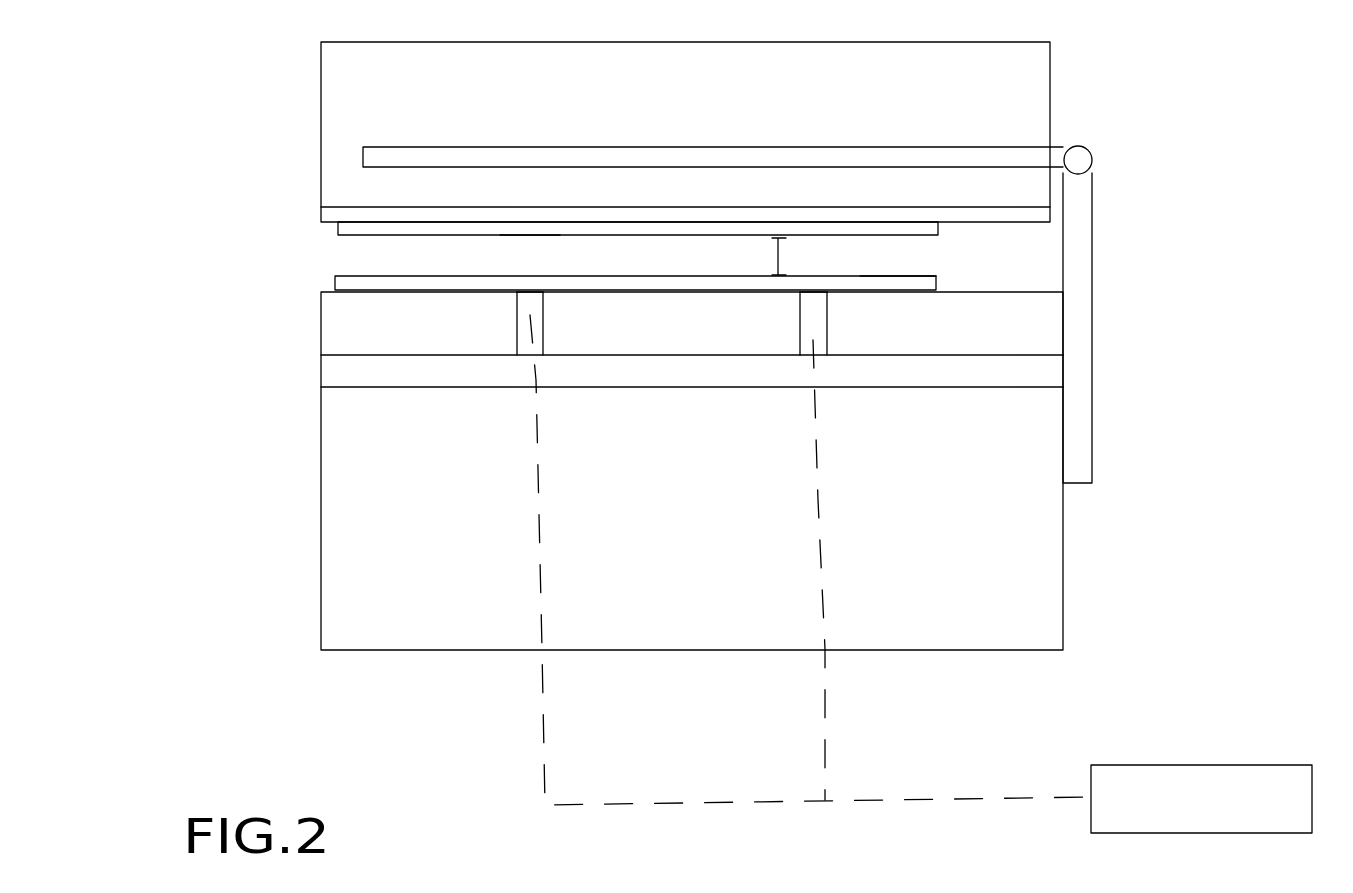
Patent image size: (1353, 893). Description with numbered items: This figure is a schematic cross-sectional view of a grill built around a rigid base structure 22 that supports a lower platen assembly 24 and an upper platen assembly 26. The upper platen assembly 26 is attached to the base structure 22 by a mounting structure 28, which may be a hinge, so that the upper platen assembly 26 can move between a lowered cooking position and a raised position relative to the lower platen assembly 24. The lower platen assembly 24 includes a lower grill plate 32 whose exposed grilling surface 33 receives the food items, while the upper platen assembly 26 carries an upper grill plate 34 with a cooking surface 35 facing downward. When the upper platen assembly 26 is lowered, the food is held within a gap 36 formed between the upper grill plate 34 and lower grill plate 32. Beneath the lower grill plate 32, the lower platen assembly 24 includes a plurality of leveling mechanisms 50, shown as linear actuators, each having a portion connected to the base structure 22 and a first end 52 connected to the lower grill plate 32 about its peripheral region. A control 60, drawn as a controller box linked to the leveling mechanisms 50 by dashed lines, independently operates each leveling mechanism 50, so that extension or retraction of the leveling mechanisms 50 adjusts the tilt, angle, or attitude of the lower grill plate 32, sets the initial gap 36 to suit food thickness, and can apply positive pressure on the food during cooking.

The base structure 22 is at (1030, 526).
The lower platen assembly 24 is at (321, 292).
The upper platen assembly 26 is at (314, 214).
The mounting structure 28 is at (1075, 210).
The lower grill plate 32 is at (342, 284).
The grilling surface 33 is at (883, 277).
The upper grill plate 34 is at (336, 230).
The cooking surface 35 is at (530, 237).
The gap 36 is at (796, 257).
The leveling mechanism 50 is at (530, 315).
The first end 52 is at (545, 291).
The control 60 is at (1240, 765).